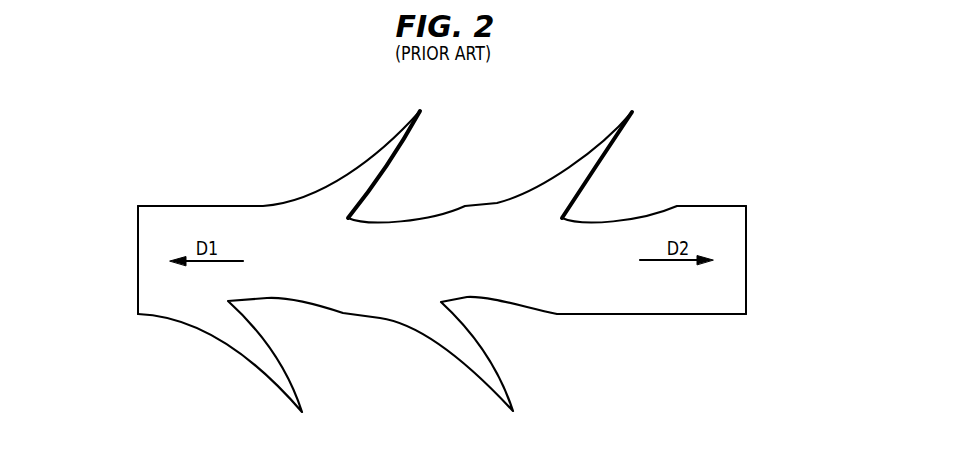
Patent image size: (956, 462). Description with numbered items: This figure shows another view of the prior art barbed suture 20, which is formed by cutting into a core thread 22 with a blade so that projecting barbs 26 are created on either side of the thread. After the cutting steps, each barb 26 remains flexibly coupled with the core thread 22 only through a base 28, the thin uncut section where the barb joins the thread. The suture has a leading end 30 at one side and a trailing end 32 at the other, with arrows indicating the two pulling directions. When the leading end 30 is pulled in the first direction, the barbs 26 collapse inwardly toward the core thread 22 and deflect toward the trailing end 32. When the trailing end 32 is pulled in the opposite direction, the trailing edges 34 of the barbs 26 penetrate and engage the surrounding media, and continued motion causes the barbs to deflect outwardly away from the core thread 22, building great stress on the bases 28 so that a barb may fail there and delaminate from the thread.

The barbed suture 20 is at (478, 100).
The core thread 22 is at (165, 306).
The barb 26 is at (404, 135).
The base 28 is at (333, 205).
The leading end 30 is at (139, 195).
The trailing end 32 is at (747, 193).
The trailing edge 34 is at (631, 126).